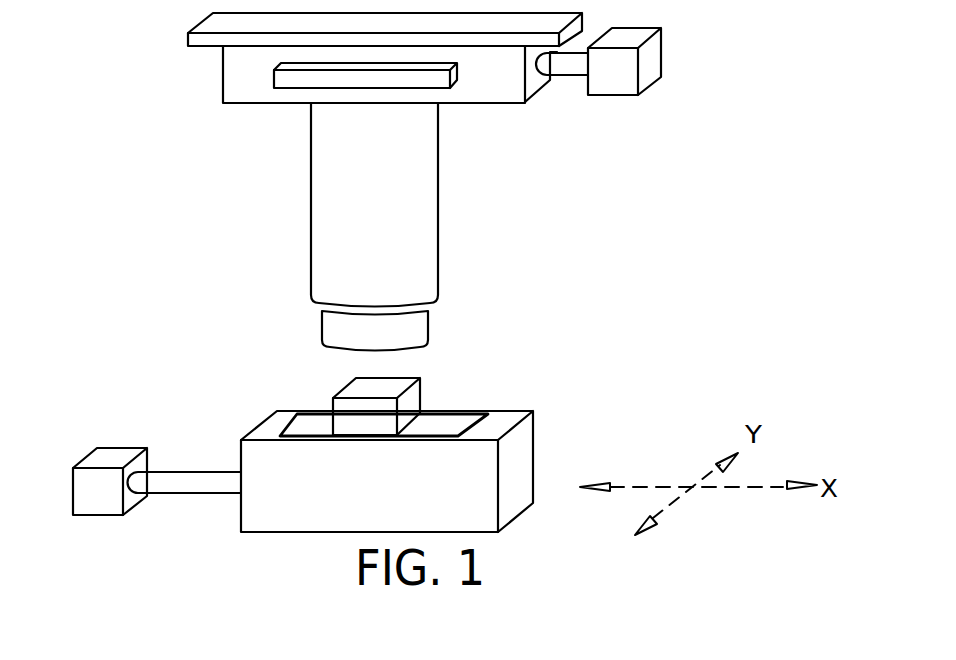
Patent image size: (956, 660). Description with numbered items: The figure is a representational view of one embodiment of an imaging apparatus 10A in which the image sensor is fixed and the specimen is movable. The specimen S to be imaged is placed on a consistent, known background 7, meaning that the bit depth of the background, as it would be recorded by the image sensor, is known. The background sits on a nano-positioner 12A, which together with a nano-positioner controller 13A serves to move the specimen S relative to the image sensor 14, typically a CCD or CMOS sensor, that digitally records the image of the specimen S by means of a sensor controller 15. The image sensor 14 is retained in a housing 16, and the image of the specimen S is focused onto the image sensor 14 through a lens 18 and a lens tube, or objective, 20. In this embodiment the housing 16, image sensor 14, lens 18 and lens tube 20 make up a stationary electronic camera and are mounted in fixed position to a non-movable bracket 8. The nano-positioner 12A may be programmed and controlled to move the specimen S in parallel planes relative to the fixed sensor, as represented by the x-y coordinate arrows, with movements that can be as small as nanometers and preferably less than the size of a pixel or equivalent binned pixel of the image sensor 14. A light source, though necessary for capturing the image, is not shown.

The imaging apparatus 10A is at (482, 180).
The non-movable bracket 8 is at (203, 43).
The housing 16 is at (515, 83).
The image sensor 14 is at (433, 78).
The sensor controller 15 is at (650, 72).
The lens tube 20 is at (438, 247).
The lens 18 is at (350, 328).
The nano-positioner 12A is at (480, 475).
The known background 7 is at (315, 423).
The specimen S is at (408, 403).
The nano-positioner controller 13A is at (100, 490).